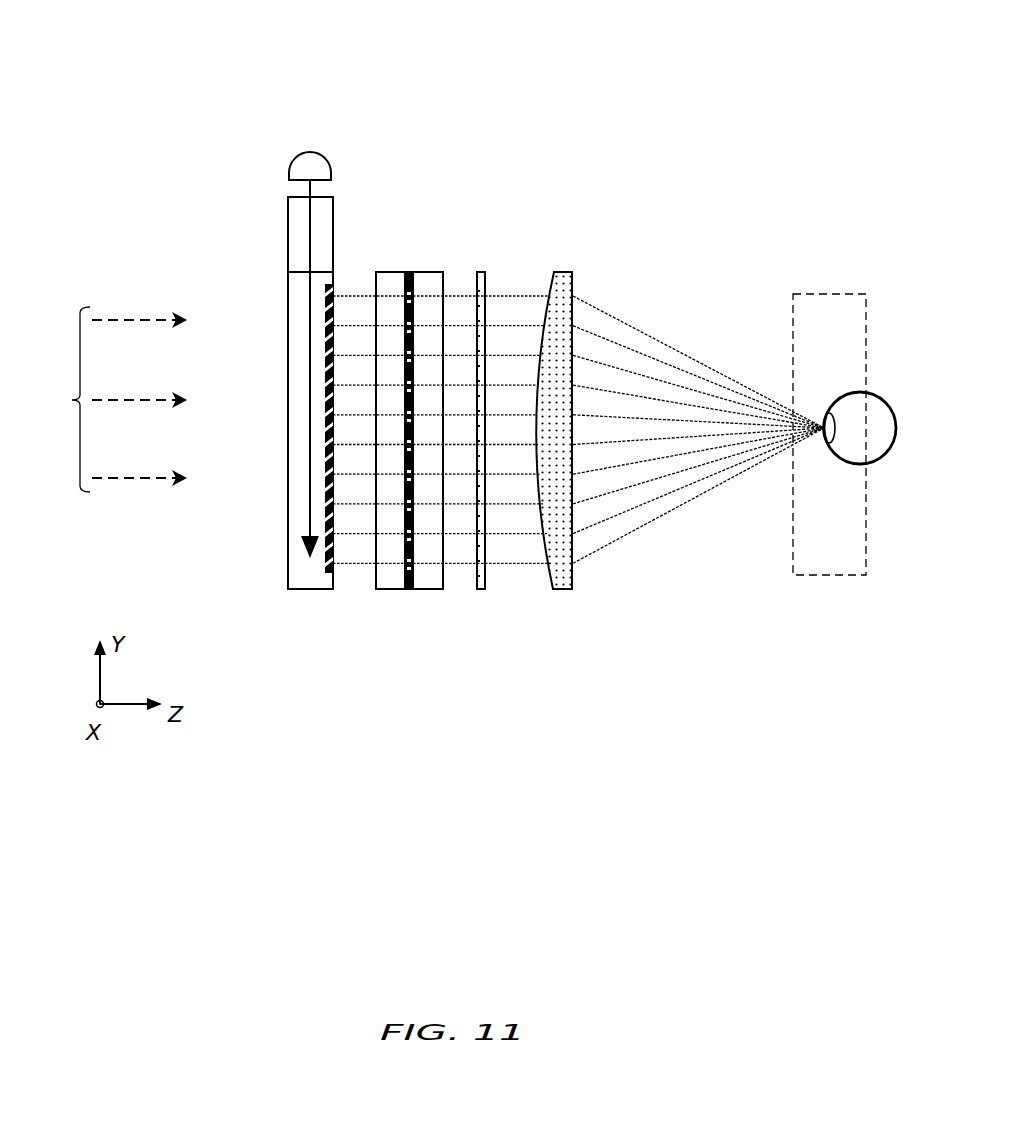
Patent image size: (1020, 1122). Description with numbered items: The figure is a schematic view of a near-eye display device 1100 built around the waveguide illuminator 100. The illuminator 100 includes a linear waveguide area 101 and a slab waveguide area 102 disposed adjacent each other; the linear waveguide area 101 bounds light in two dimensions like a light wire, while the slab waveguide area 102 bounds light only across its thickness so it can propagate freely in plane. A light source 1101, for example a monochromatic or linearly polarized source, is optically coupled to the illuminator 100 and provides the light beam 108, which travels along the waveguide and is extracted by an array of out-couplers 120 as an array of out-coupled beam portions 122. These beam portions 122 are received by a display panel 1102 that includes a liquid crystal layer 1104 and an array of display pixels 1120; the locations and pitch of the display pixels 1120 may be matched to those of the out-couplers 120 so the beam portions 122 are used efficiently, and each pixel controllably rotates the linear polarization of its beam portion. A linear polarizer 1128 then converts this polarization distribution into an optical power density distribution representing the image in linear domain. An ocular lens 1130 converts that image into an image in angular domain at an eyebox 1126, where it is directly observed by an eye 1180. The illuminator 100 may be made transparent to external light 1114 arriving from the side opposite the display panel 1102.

The waveguide illuminator 100 is at (193, 254).
The linear waveguide area 101 is at (300, 227).
The slab waveguide area 102 is at (297, 347).
The light beam 108 is at (308, 413).
The out-couplers 120 is at (324, 476).
The out-coupled beam portions 122 is at (357, 535).
The display device 1100 is at (518, 102).
The light source 1101 is at (311, 162).
The display panel 1102 is at (390, 272).
The liquid crystal layer 1104 is at (407, 606).
The external light 1114 is at (71, 400).
The display pixels 1120 is at (414, 330).
The eyebox 1126 is at (858, 511).
The linear polarizer 1128 is at (481, 272).
The ocular lens 1130 is at (562, 272).
The eye 1180 is at (878, 393).